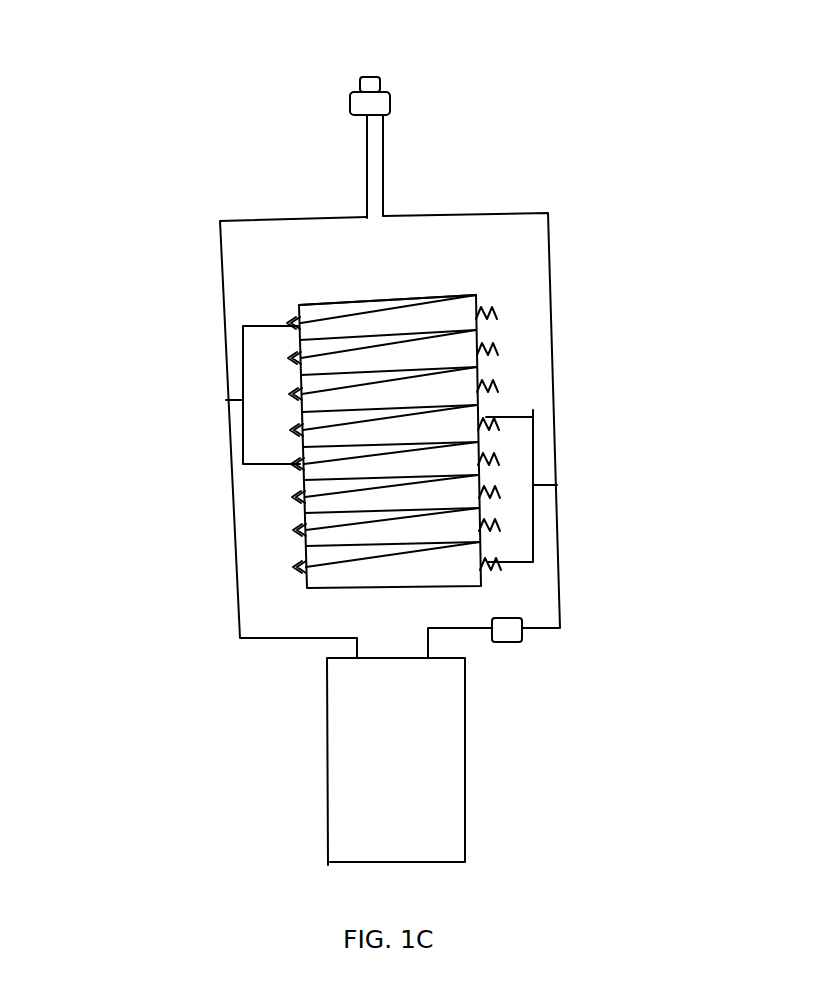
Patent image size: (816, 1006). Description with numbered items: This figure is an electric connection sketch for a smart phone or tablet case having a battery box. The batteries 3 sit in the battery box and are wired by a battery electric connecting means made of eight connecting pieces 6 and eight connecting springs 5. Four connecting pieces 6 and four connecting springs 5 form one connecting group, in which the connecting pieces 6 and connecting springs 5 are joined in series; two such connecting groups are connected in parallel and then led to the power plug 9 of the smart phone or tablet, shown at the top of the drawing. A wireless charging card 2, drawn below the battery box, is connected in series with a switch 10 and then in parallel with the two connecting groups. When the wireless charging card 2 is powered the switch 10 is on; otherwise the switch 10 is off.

The wireless charging card 2 is at (422, 753).
The batteries 3 is at (477, 327).
The connecting spring 5 is at (486, 387).
The connecting piece 6 is at (290, 323).
The power plug 9 is at (385, 92).
The switch 10 is at (508, 627).